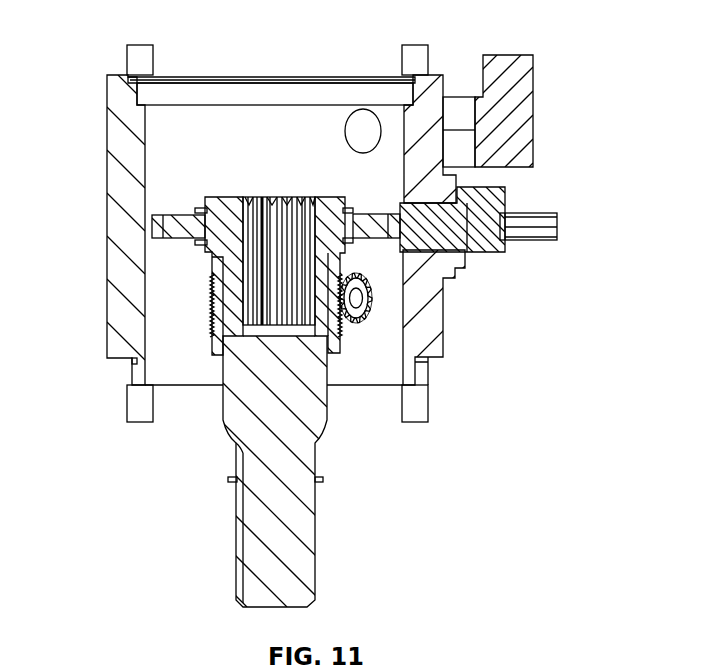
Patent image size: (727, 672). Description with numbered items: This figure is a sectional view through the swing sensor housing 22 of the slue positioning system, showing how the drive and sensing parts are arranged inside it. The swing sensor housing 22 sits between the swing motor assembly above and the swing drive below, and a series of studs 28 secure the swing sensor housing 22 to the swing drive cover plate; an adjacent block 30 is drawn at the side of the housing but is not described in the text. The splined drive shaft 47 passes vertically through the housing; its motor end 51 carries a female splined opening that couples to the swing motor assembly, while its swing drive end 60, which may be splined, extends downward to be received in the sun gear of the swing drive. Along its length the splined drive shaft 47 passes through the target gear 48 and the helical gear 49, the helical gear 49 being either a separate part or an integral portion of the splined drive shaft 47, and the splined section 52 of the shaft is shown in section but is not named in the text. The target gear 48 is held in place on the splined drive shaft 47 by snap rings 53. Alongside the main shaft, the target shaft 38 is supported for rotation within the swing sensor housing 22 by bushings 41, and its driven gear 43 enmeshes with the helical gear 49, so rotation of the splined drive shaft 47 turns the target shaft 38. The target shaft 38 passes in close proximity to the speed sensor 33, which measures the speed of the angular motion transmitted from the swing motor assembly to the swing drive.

The swing sensor housing 22 is at (100, 232).
The studs 28 is at (127, 63).
The motor 30 is at (533, 97).
The speed sensor 33 is at (490, 206).
The target shaft 38 is at (358, 322).
The bushings 41 is at (372, 297).
The driven gear 43 is at (372, 312).
The splined drive shaft 47 is at (225, 437).
The target gear 48 is at (187, 216).
The helical gear 49 is at (210, 322).
The motor end 51 is at (227, 197).
The splined shaft 52 is at (248, 197).
The snap rings 53 is at (349, 208).
The swing drive end 60 is at (247, 546).